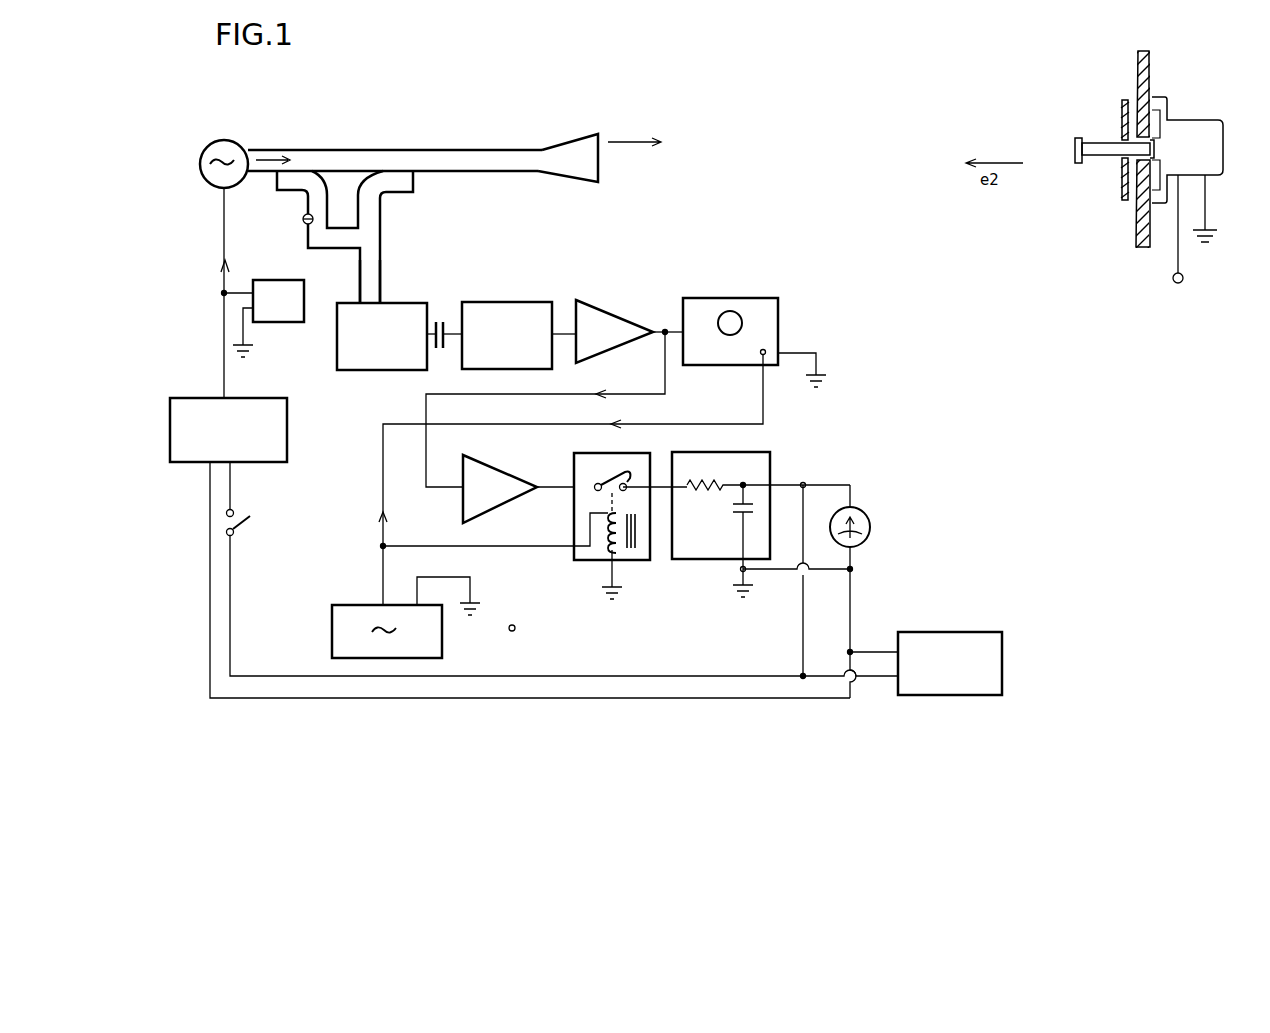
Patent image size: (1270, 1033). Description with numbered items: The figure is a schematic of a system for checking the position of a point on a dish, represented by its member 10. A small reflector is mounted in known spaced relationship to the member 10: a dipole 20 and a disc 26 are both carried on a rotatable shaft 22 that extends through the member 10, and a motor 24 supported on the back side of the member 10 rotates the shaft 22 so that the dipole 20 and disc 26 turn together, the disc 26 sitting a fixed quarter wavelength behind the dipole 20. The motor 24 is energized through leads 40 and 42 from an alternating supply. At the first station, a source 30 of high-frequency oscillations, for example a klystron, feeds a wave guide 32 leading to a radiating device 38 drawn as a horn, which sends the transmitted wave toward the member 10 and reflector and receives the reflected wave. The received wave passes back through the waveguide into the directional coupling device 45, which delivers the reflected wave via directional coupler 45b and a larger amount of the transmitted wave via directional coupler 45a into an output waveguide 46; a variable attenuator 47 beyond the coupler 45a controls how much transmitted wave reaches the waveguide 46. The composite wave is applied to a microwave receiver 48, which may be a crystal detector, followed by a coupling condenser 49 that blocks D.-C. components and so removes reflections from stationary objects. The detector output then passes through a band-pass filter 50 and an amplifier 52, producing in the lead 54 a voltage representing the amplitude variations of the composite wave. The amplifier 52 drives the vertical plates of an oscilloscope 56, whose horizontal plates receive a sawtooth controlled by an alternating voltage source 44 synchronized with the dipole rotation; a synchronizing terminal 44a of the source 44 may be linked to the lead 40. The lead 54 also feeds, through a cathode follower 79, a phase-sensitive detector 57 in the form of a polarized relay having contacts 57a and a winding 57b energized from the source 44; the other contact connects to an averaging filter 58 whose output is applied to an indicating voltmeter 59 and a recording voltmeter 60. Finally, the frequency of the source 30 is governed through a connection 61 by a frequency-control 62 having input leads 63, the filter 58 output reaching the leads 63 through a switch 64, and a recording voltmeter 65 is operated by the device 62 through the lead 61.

The member 10 is at (1153, 64).
The dipole 20 is at (1078, 163).
The rotatable shaft 22 is at (1103, 160).
The motor 24 is at (1182, 135).
The disc 26 is at (1120, 112).
The source of high-frequency electromagnetic oscillations 30 is at (217, 148).
The wave guide 32 is at (268, 150).
The radiating device 38 is at (566, 136).
The lead 40 is at (1175, 255).
The lead 42 is at (1205, 216).
The alternating voltage source 44 is at (442, 648).
The synchronizing terminal 44a is at (512, 631).
The directional coupling device 45 is at (395, 233).
The directional coupler 45a is at (297, 182).
The directional coupler 45b is at (397, 178).
The output waveguide 46 is at (382, 272).
The variable attenuator 47 is at (302, 223).
The microwave receiver 48 is at (362, 368).
The coupling condenser 49 is at (446, 320).
The band-pass filter 50 is at (524, 305).
The amplifier 52 is at (608, 325).
The lead 54 is at (660, 330).
The oscilloscope 56 is at (749, 305).
The phase-sensitive detector 57 is at (648, 563).
The contacts 57a is at (597, 481).
The winding 57b is at (606, 540).
The averaging filter 58 is at (758, 463).
The indicating voltmeter 59 is at (862, 516).
The recording voltmeter 60 is at (933, 632).
The connection 61 is at (222, 229).
The frequency-control 62 is at (194, 398).
The input leads 63 is at (230, 484).
The switch 64 is at (250, 521).
The recording voltmeter 65 is at (292, 322).
The cathode follower 79 is at (470, 500).